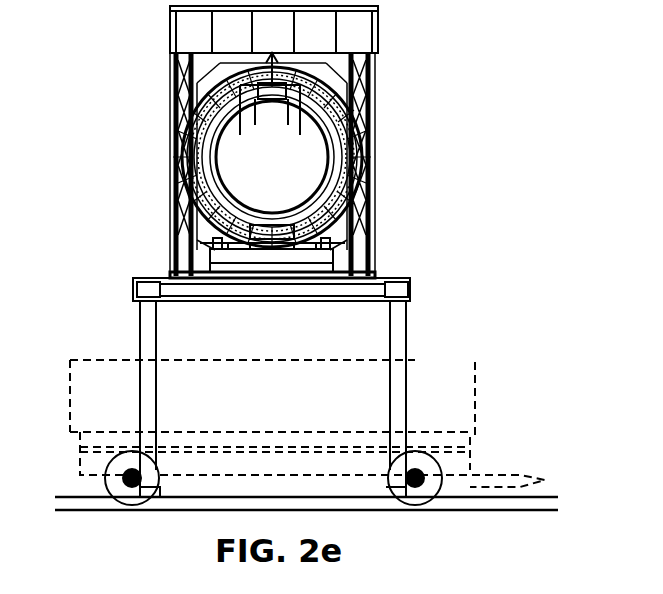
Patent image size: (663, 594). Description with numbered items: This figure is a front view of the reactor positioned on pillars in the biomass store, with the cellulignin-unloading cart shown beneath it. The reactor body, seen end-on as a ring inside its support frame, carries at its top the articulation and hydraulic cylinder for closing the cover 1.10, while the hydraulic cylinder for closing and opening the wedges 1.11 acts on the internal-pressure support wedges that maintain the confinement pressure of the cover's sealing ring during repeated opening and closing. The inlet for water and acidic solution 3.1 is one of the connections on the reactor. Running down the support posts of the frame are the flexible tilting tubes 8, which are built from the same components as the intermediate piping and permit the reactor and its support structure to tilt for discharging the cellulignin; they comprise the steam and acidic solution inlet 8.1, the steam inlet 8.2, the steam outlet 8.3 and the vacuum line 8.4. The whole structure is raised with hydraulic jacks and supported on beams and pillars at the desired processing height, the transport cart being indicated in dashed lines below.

The articulation and hydraulic cylinder for closing the cover 1.10 is at (274, 54).
The hydraulic cylinder for closing and opening the wedges 1.11 is at (312, 130).
The inlet for water and acidic solution 3.1 is at (270, 103).
The flexible tilting tubes 8 is at (271, 289).
The steam and acidic solution inlet 8.1 is at (345, 178).
The steam inlet 8.2 is at (176, 208).
The steam outlet 8.3 is at (372, 200).
The vacuum 8.4 is at (199, 178).